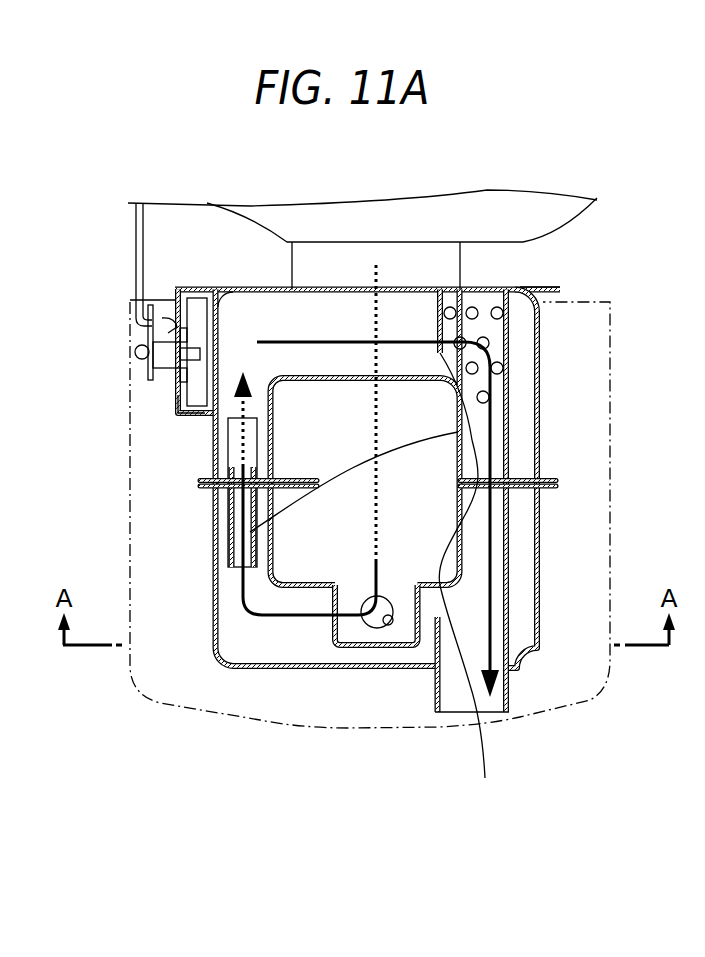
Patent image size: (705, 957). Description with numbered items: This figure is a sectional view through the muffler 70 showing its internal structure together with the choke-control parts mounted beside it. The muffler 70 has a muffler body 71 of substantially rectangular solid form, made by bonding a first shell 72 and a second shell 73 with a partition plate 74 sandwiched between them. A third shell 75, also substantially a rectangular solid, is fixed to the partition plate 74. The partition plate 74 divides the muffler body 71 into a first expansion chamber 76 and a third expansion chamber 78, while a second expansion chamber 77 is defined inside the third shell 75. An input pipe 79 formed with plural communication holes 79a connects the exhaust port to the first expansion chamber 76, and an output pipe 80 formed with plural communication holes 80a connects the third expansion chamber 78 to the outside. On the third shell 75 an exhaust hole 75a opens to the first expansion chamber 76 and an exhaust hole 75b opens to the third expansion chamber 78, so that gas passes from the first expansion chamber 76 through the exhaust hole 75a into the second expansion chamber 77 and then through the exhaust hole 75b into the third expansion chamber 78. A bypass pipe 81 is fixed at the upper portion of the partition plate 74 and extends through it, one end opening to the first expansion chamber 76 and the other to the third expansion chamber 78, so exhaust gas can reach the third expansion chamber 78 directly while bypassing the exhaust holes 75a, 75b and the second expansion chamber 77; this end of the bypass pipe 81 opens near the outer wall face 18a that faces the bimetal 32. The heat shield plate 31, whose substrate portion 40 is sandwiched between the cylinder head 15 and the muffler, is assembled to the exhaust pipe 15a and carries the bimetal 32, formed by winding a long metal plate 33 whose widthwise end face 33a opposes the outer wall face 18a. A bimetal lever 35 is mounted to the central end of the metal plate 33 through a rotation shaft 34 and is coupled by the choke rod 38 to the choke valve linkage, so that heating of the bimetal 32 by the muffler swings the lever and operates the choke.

The cylinder head 15 is at (482, 203).
The exhaust pipe 15a is at (440, 252).
The outer wall face 18a is at (207, 382).
The heat shield plate 31 is at (556, 284).
The bimetal 32 is at (174, 420).
The metal plate 33 is at (200, 298).
The end face 33a is at (231, 304).
The rotation shaft 34 is at (136, 349).
The bimetal lever 35 is at (147, 373).
The choke rod 38 is at (134, 245).
The substrate portion 40 is at (537, 289).
The muffler 70 is at (352, 475).
The muffler body 71 is at (445, 489).
The first shell 72 is at (542, 522).
The second shell 73 is at (542, 454).
The partition plate 74 is at (520, 484).
The third shell 75 is at (358, 380).
The exhaust hole 75a is at (379, 573).
The exhaust hole 75b is at (305, 395).
The first expansion chamber 76 is at (247, 656).
The second expansion chamber 77 is at (294, 566).
The third expansion chamber 78 is at (258, 318).
The input pipe 79 is at (345, 662).
The communication holes 79a is at (398, 616).
The output pipe 80 is at (442, 725).
The communication holes 80a is at (440, 353).
The bypass pipe 81 is at (230, 540).